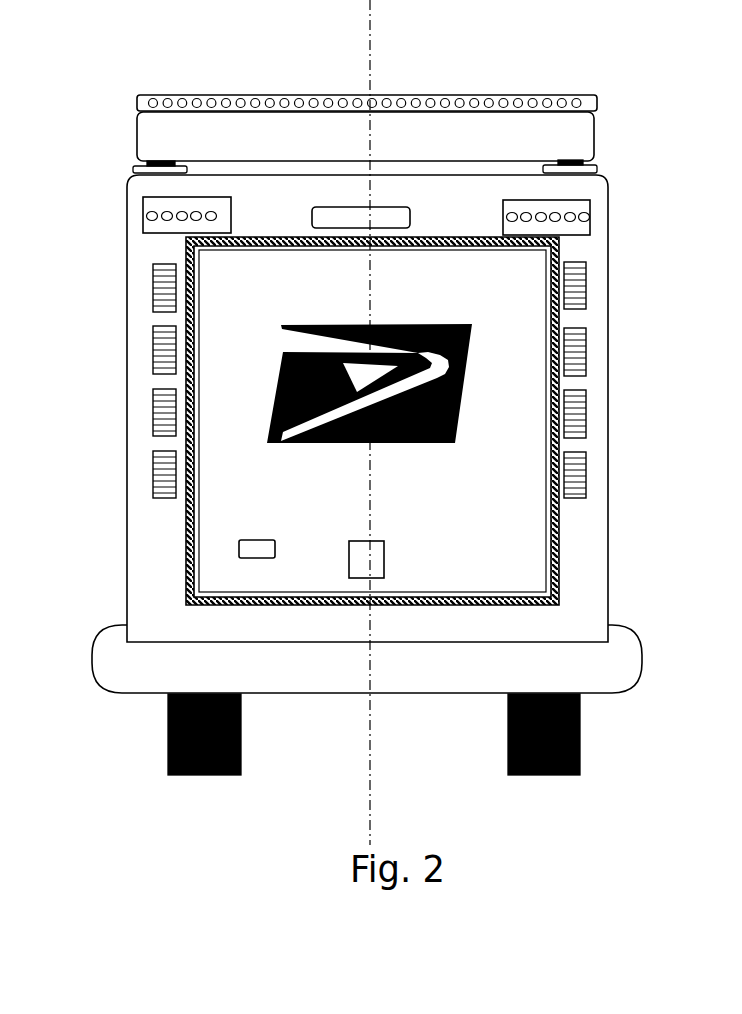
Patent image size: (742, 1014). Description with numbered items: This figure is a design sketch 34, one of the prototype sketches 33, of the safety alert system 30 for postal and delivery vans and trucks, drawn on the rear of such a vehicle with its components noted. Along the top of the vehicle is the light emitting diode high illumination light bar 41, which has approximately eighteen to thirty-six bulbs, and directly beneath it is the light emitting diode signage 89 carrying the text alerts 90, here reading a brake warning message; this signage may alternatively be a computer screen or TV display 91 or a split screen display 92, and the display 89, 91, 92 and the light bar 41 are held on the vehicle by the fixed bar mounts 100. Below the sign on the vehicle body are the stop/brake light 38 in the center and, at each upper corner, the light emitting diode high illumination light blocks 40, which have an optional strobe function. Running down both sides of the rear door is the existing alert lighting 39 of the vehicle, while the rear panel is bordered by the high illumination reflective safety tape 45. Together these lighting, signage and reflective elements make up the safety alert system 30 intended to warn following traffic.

The safety alert system 30 is at (120, 792).
The prototype sketches 33 is at (340, 512).
The design sketch 34 is at (340, 512).
The stop/brake light 38 is at (338, 207).
The existing alert lighting 39 is at (150, 470).
The LED high illumination light blocks 40 is at (590, 216).
The LED high illumination light bar 41 is at (445, 95).
The high illumination reflective safety tape 45 is at (560, 534).
The LED signage 89 is at (312, 148).
The text alerts 90 is at (560, 135).
The computer screen/TV display 91 is at (312, 148).
The split screen display 92 is at (125, 146).
The fixed bar mounts 100 is at (598, 169).